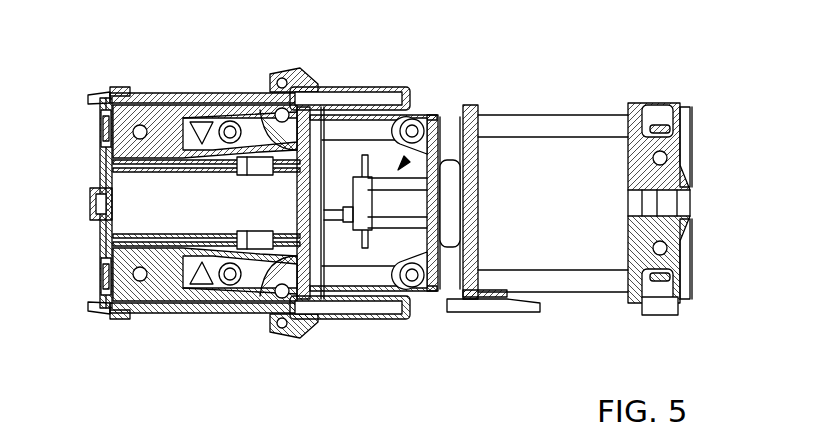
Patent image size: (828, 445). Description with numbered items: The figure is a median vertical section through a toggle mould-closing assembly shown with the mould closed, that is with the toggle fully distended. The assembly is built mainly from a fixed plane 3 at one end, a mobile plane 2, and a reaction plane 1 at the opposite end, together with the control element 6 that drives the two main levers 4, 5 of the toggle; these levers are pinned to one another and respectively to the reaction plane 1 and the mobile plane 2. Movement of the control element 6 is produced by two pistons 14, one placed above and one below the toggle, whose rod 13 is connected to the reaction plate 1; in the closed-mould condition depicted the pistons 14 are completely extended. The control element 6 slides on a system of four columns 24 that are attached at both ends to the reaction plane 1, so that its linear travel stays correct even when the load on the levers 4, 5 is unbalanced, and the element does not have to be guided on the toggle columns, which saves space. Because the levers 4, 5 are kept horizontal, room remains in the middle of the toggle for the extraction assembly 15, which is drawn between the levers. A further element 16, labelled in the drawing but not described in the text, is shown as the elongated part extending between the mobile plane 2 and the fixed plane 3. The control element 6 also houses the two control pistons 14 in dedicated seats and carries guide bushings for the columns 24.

The reaction plane 1 is at (98, 88).
The mobile plane 2 is at (479, 119).
The fixed plane 3 is at (638, 107).
The main lever of the toggle 4 is at (243, 300).
The main lever of the toggle 5 is at (374, 274).
The control element 6 is at (270, 72).
The rod 13 is at (203, 88).
The piston 14 is at (363, 88).
The extraction assembly 15 is at (403, 162).
The cylinder 16 is at (575, 123).
The column 24 is at (107, 168).